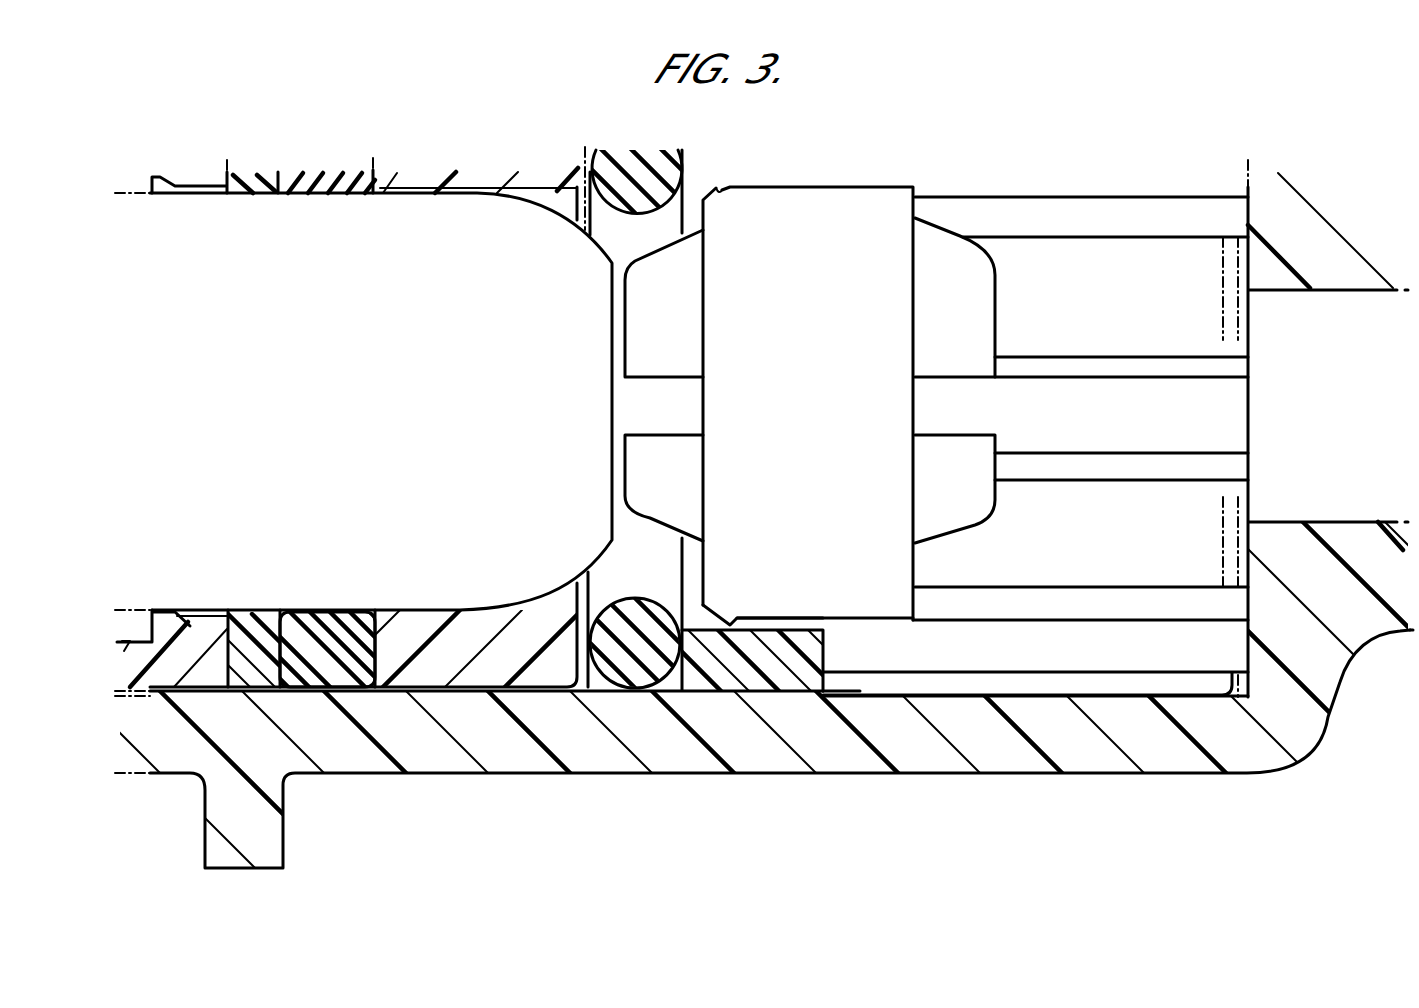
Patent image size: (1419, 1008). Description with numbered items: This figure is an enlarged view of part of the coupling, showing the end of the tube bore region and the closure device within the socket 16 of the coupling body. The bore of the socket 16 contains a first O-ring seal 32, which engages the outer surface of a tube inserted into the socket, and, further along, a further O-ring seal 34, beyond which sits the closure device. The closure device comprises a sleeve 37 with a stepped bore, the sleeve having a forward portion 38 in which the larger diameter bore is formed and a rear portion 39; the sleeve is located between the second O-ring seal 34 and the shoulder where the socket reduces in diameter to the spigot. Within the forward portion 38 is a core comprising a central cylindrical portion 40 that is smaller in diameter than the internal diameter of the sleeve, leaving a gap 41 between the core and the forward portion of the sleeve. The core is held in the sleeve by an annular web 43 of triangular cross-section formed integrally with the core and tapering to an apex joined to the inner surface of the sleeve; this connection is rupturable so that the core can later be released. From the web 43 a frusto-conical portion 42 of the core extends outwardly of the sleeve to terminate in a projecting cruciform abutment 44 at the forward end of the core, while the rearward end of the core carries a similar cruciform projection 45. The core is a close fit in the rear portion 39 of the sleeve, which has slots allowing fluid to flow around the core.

The socket 16 is at (375, 757).
The first O-ring seal 32 is at (327, 617).
The further O-ring seal 34 is at (613, 597).
The sleeve 37 is at (827, 690).
The forward portion of the sleeve 38 is at (743, 680).
The rear portion of the sleeve 39 is at (1082, 652).
The central cylindrical portion 40 is at (882, 223).
The gap 41 is at (773, 623).
The frusto-conical portion 42 is at (717, 187).
The annular web 43 is at (738, 633).
The cruciform abutment 44 is at (638, 400).
The cruciform projection 45 is at (972, 507).